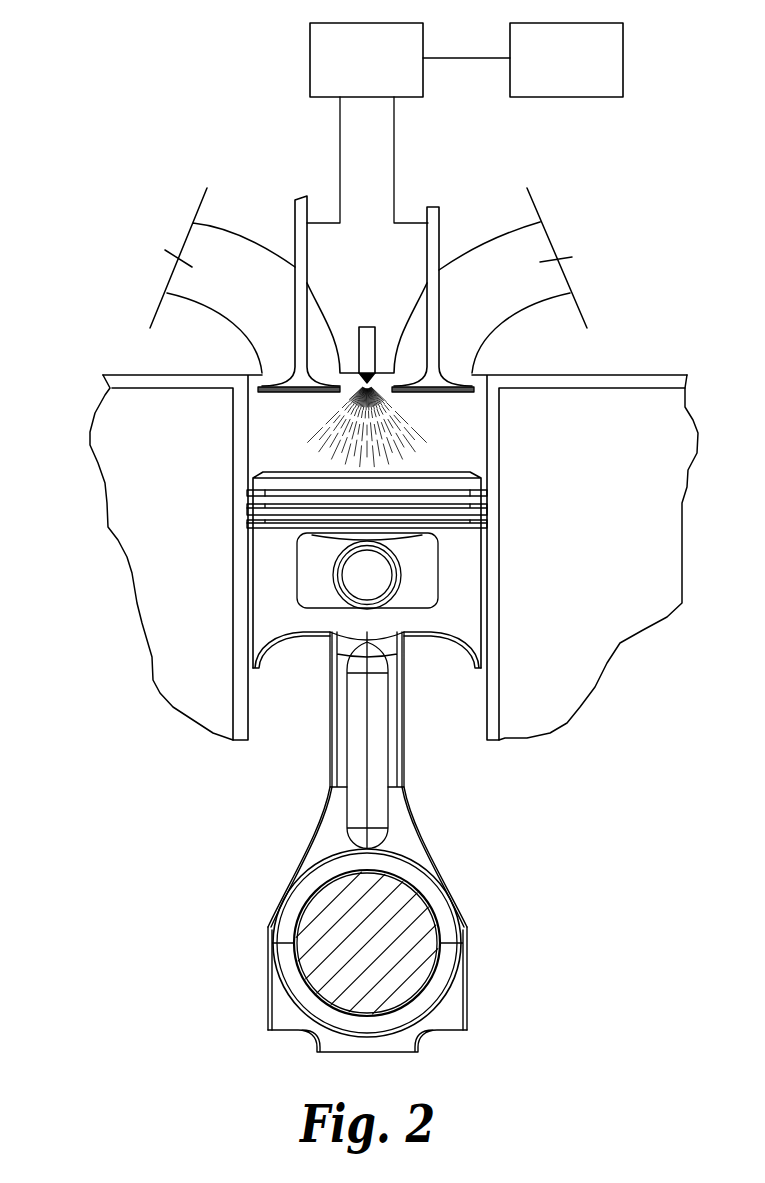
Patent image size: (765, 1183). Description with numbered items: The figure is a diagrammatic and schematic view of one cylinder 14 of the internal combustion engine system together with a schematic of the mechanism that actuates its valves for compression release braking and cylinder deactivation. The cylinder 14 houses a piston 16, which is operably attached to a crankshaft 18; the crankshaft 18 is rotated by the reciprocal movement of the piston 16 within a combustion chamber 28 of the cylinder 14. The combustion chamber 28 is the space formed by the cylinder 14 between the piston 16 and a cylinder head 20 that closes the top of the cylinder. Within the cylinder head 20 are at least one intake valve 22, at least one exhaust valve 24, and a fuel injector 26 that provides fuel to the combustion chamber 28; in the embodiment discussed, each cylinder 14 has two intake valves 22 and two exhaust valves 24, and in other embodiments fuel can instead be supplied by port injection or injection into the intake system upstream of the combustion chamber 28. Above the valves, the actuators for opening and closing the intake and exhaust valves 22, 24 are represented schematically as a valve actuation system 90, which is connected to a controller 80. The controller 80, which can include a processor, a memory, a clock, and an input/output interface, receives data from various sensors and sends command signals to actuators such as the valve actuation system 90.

The cylinder 14 is at (192, 433).
The piston 16 is at (458, 558).
The crankshaft 18 is at (395, 902).
The cylinder head 20 is at (628, 383).
The intake valve 22 is at (295, 235).
The exhaust valve 24 is at (439, 240).
The fuel injector 26 is at (376, 327).
The combustion chamber 28 is at (467, 423).
The controller 80 is at (582, 75).
The valve actuation system 90 is at (380, 75).